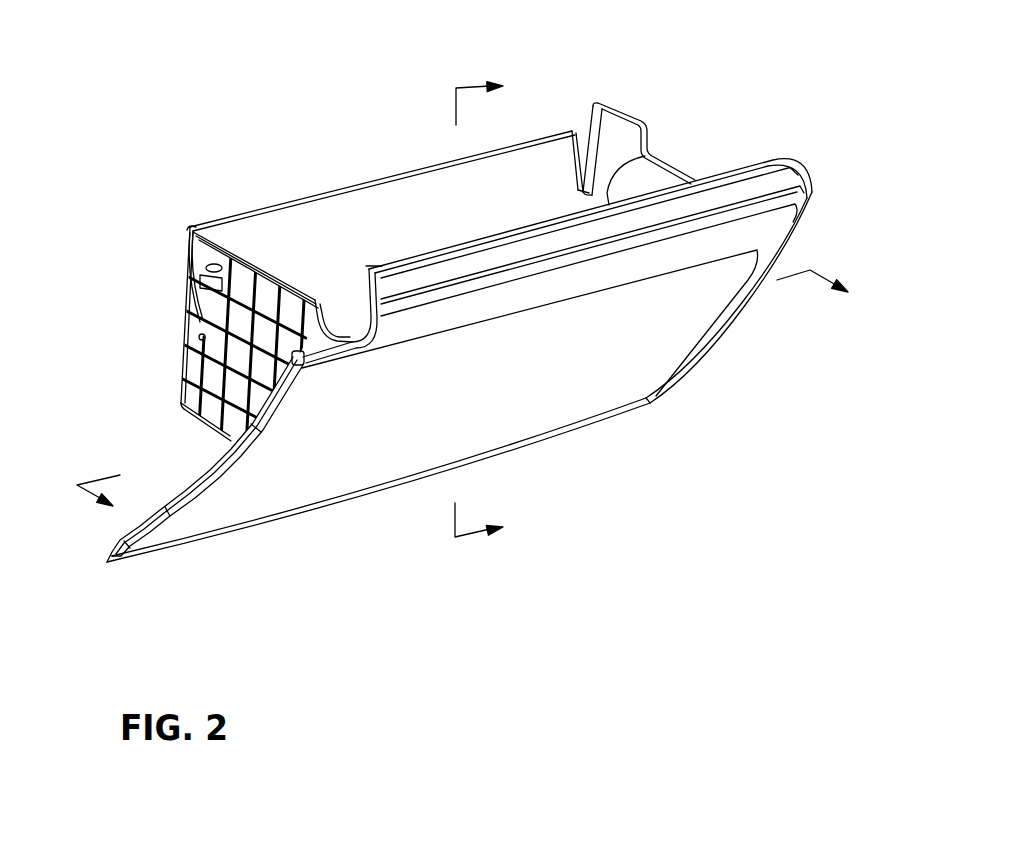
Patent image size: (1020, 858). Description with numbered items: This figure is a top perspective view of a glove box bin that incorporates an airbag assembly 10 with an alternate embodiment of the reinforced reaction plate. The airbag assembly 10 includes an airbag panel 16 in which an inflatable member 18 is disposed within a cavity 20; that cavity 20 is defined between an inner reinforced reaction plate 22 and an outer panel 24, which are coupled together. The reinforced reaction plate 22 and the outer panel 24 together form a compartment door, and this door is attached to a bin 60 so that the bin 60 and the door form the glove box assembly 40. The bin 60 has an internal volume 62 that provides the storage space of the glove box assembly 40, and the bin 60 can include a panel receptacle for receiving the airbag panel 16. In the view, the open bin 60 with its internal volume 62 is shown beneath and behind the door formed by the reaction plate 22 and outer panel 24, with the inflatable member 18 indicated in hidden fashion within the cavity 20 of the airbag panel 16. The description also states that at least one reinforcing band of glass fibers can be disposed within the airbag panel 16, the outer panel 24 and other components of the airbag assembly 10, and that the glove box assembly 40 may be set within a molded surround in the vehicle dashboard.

The airbag assembly 10 is at (646, 78).
The airbag panel 16 is at (306, 524).
The inflatable member 18 is at (520, 408).
The cavity 20 is at (645, 352).
The reinforced reaction plate 22 is at (647, 156).
The outer panel 24 is at (333, 457).
The glove box assembly 40 is at (395, 163).
The bin 60 is at (260, 240).
The internal volume 62 is at (332, 257).